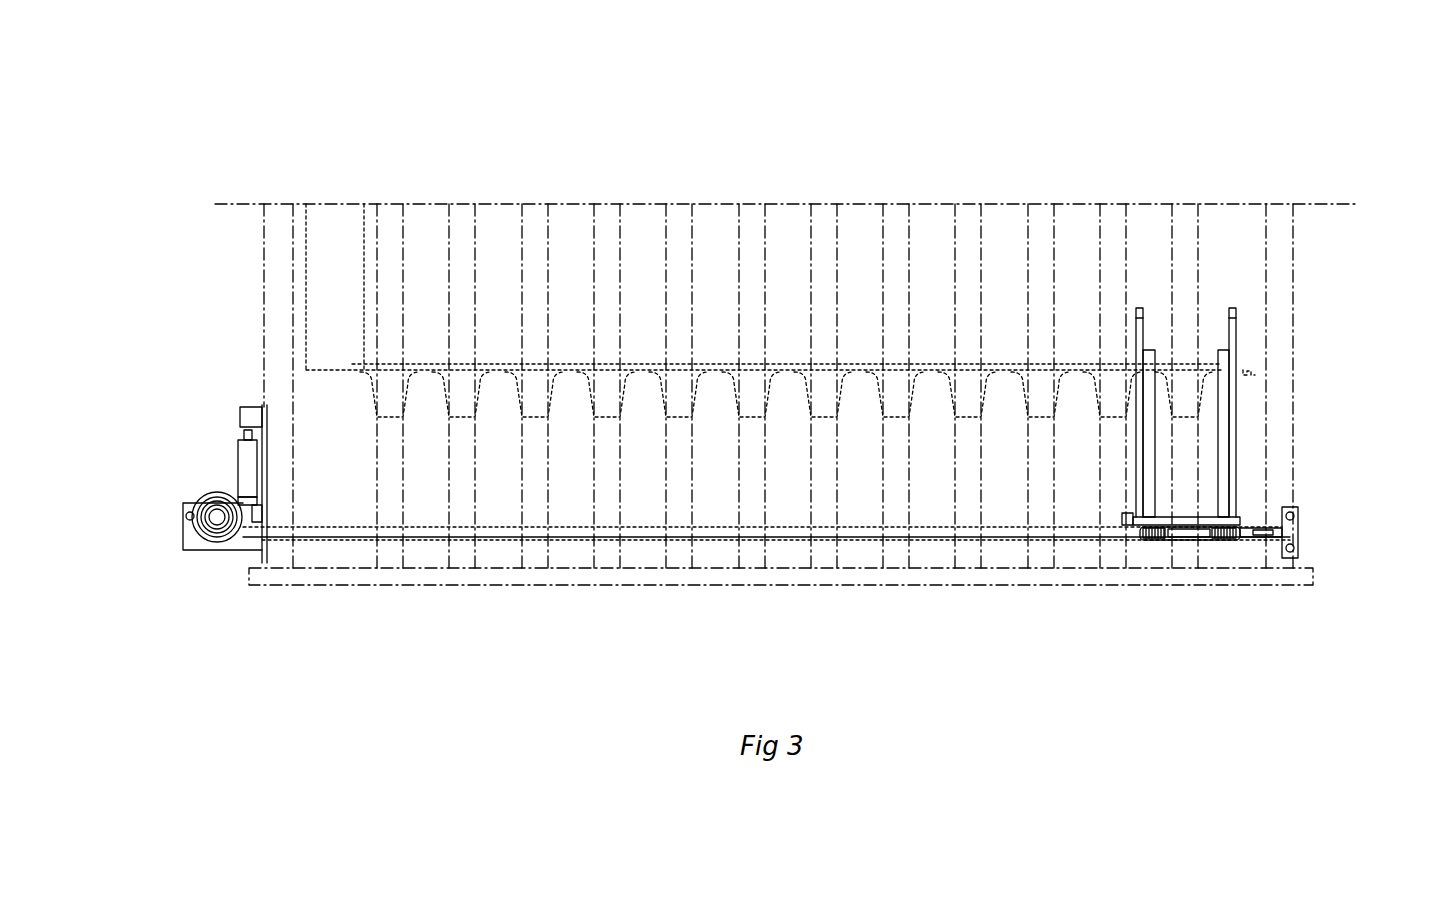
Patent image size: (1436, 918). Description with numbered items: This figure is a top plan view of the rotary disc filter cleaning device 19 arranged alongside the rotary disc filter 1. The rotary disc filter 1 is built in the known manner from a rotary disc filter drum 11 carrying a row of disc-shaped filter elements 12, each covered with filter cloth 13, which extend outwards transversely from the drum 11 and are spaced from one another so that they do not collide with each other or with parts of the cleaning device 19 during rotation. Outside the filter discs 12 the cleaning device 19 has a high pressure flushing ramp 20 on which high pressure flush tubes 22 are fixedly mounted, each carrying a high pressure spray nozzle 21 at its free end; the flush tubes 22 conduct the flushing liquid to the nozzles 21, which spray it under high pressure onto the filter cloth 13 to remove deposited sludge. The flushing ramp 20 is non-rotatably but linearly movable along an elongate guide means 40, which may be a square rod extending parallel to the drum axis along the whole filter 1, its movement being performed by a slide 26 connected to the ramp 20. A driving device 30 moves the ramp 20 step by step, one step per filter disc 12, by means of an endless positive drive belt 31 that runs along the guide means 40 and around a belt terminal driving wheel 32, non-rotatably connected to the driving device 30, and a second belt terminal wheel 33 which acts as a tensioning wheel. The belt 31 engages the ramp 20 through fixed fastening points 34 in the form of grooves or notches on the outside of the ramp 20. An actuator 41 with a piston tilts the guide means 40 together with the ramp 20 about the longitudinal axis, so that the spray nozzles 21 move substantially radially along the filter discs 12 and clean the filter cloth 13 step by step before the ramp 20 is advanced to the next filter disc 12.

The rotary disc filter 1 is at (785, 320).
The rotary disc filter drum 11 is at (503, 220).
The disc-shaped filter element 12 is at (1187, 295).
The filter cloth 13 is at (1142, 292).
The rotary disc filter cleaning device 19 is at (1316, 540).
The high pressure flushing ramp 20 is at (1187, 530).
The high pressure spray nozzle 21 is at (1233, 286).
The high pressure flush tube 22 is at (1142, 477).
The slide 26 is at (1207, 540).
The driving device 30 is at (183, 540).
The belt 31 is at (766, 588).
The belt terminal driving wheel 32 is at (224, 568).
The belt terminal wheel 33 is at (1254, 550).
The fixed fastening points 34 is at (1152, 542).
The guide means 40 is at (863, 538).
The actuator 41 is at (203, 462).